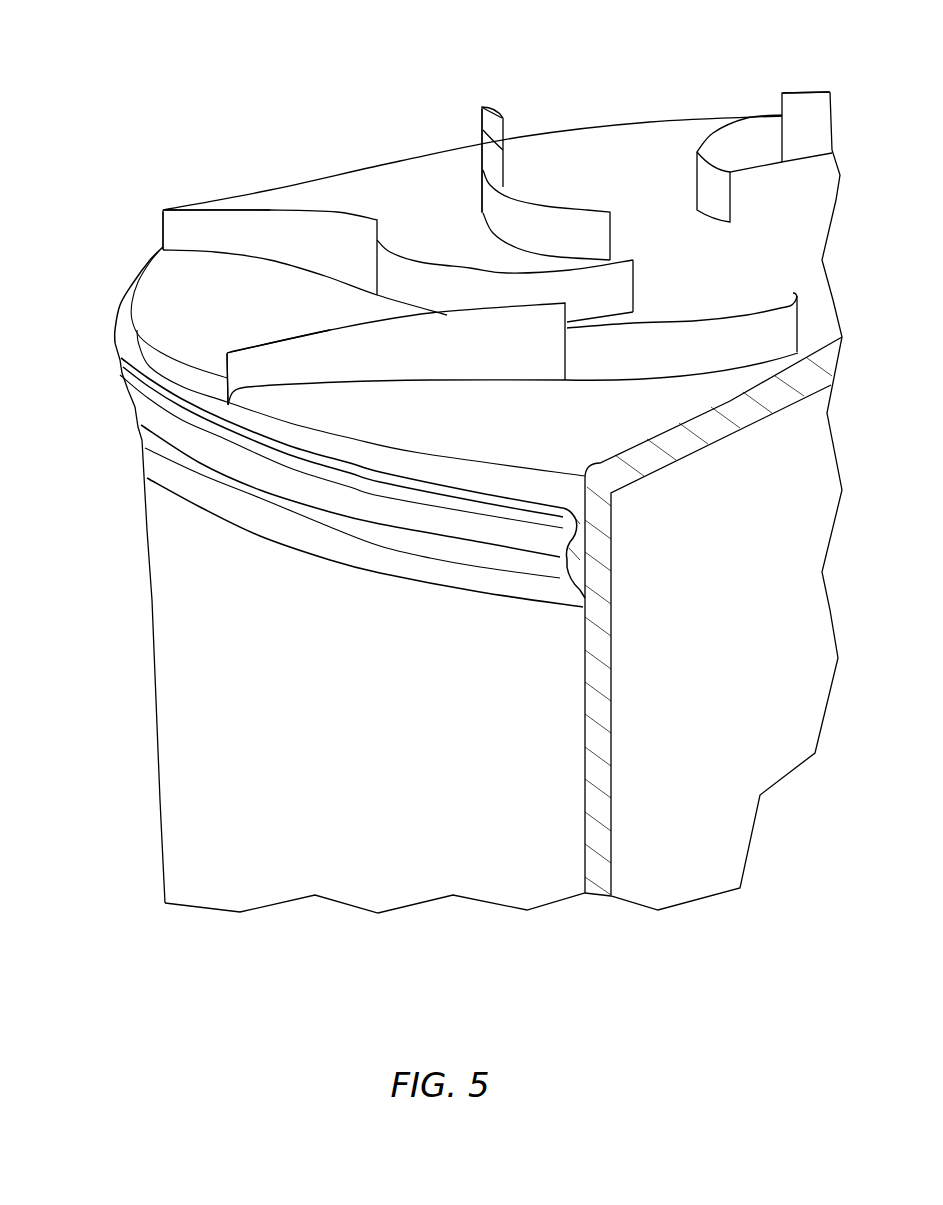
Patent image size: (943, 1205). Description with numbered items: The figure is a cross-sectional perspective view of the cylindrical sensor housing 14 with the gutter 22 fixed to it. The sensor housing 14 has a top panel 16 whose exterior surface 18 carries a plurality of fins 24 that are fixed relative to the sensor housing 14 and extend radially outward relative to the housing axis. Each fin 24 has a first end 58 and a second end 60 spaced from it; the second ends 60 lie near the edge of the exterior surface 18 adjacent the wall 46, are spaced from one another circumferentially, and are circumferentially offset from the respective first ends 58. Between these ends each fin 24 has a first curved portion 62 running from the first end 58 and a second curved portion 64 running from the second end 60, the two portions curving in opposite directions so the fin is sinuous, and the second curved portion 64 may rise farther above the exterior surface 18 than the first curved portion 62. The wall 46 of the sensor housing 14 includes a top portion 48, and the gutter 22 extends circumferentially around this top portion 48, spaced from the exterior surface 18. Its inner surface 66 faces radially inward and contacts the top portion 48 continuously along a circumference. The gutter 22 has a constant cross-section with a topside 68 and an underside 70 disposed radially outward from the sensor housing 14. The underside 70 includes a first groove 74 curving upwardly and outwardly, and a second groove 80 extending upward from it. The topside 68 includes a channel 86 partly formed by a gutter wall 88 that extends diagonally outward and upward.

The sensor housing 14 is at (449, 502).
The top panel 16 is at (136, 330).
The exterior surface 18 is at (724, 276).
The gutter 22 is at (304, 437).
The fins 24 is at (298, 213).
The wall 46 is at (153, 690).
The top portion 48 is at (143, 520).
The first end 58 is at (634, 262).
The second end 60 is at (163, 230).
The first curved portion 62 is at (417, 257).
The second curved portion 64 is at (341, 212).
The inner surface 66 is at (711, 616).
The topside 68 is at (548, 496).
The underside 70 is at (509, 554).
The first groove 74 is at (577, 578).
The second groove 80 is at (567, 533).
The channel 86 is at (580, 500).
The gutter wall 88 is at (430, 480).